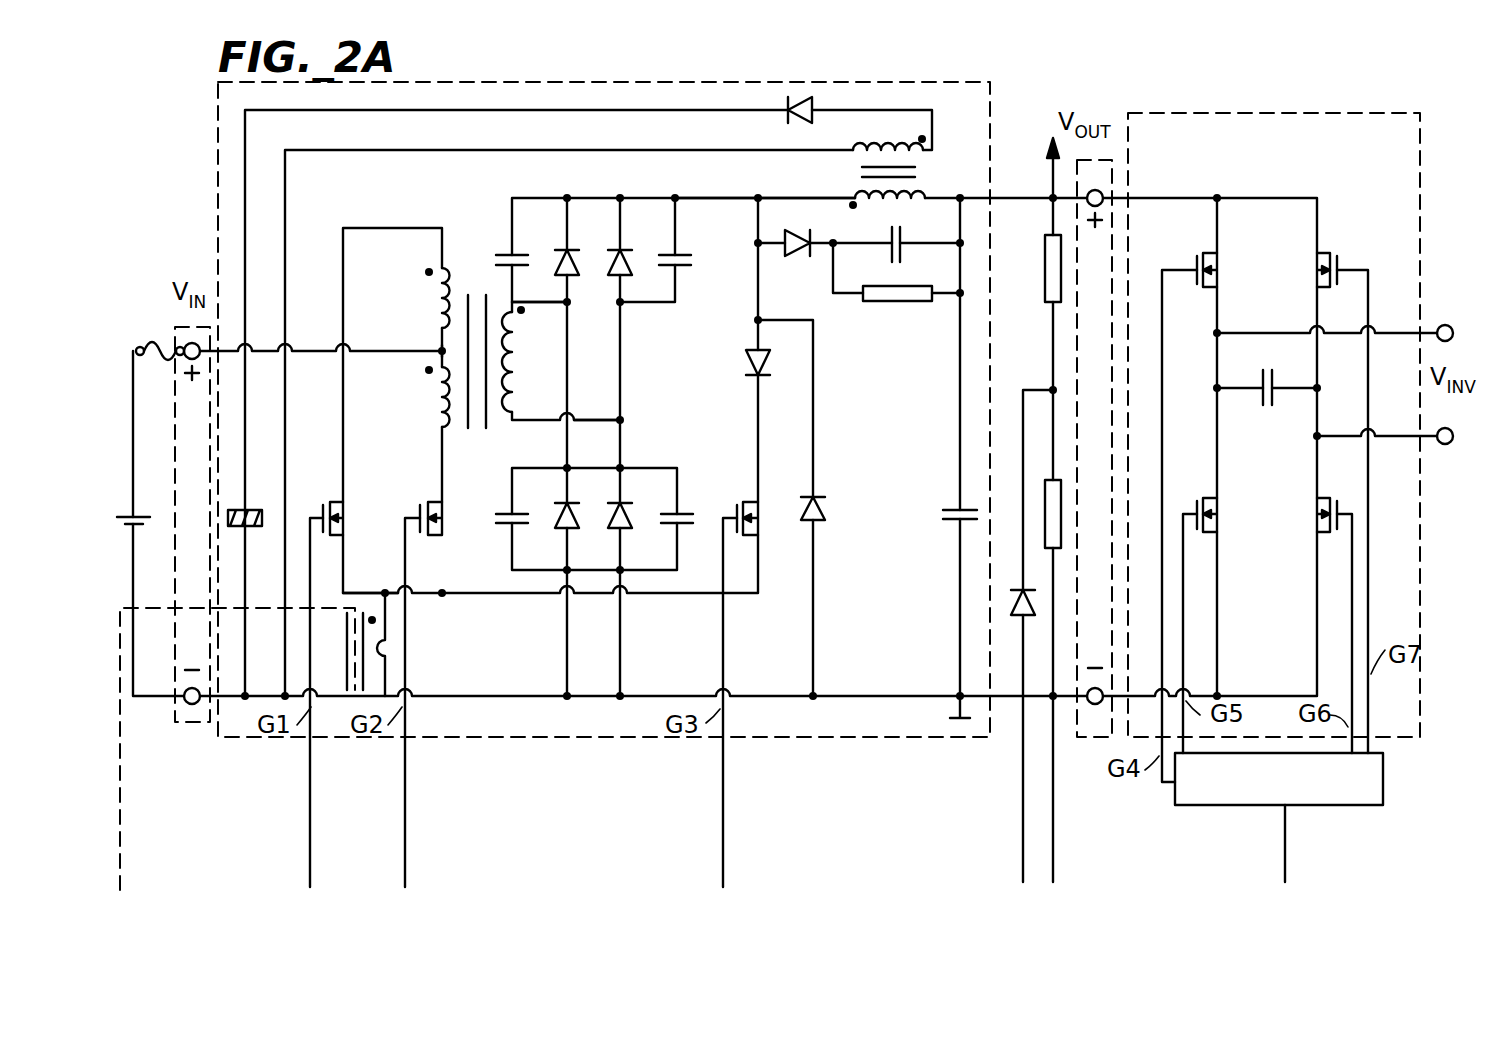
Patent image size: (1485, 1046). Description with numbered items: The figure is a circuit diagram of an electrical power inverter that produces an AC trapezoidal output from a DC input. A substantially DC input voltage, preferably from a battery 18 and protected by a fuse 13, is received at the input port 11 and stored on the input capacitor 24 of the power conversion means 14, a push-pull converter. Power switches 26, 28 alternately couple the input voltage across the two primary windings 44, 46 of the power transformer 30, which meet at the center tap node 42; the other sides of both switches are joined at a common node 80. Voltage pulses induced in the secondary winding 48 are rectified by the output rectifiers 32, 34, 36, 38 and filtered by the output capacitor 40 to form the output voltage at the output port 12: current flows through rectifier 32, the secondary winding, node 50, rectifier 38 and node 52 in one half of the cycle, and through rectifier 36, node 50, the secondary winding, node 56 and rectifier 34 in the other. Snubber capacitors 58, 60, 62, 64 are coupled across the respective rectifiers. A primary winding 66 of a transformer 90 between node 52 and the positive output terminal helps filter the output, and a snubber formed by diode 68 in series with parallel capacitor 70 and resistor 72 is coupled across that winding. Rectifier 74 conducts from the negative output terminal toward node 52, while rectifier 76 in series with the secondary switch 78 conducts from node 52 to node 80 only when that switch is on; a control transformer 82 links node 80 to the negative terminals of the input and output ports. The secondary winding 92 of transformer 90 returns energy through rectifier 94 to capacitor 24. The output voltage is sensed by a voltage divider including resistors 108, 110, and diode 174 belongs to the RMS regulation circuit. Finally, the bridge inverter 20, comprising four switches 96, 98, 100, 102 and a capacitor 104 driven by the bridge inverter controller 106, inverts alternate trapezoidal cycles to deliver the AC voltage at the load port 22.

The input port 11 is at (183, 325).
The output port 12 is at (1103, 190).
The fuse 13 is at (150, 340).
The power conversion means 14 is at (567, 82).
The battery 18 is at (135, 512).
The bridge inverter 20 is at (1362, 113).
The load port 22 is at (1445, 325).
The input capacitor 24 is at (250, 505).
The power switch 26 is at (340, 505).
The power switch 28 is at (437, 505).
The power transformer 30 is at (477, 272).
The output rectifier 32 is at (564, 506).
The output rectifier 34 is at (572, 260).
The output rectifier 36 is at (625, 508).
The output rectifier 38 is at (625, 260).
The output capacitor 40 is at (955, 510).
The node 42 is at (440, 350).
The primary winding 44 is at (437, 310).
The primary winding 46 is at (437, 400).
The secondary winding 48 is at (512, 372).
The node 50 is at (620, 420).
The node 52 is at (755, 198).
The node 56 is at (567, 305).
The capacitor 58 is at (502, 512).
The capacitor 60 is at (512, 255).
The capacitor 62 is at (681, 512).
The capacitor 64 is at (686, 257).
The primary winding 66 is at (854, 196).
The diode 68 is at (795, 228).
The capacitor 70 is at (903, 242).
The resistor 72 is at (900, 286).
The rectifier 74 is at (820, 507).
The rectifier 76 is at (753, 355).
The secondary switch 78 is at (756, 500).
The node 80 is at (385, 592).
The control transformer 82 is at (346, 646).
The transformer 90 is at (910, 178).
The secondary winding 92 is at (869, 144).
The rectifier 94 is at (812, 105).
The switch 96 is at (1212, 252).
The switch 98 is at (1212, 495).
The switch 100 is at (1328, 255).
The switch 102 is at (1323, 509).
The capacitor 104 is at (1278, 370).
The bridge inverter controller 106 is at (1385, 795).
The resistor 108 is at (1045, 275).
The resistor 110 is at (1052, 480).
The diode 174 is at (1020, 628).